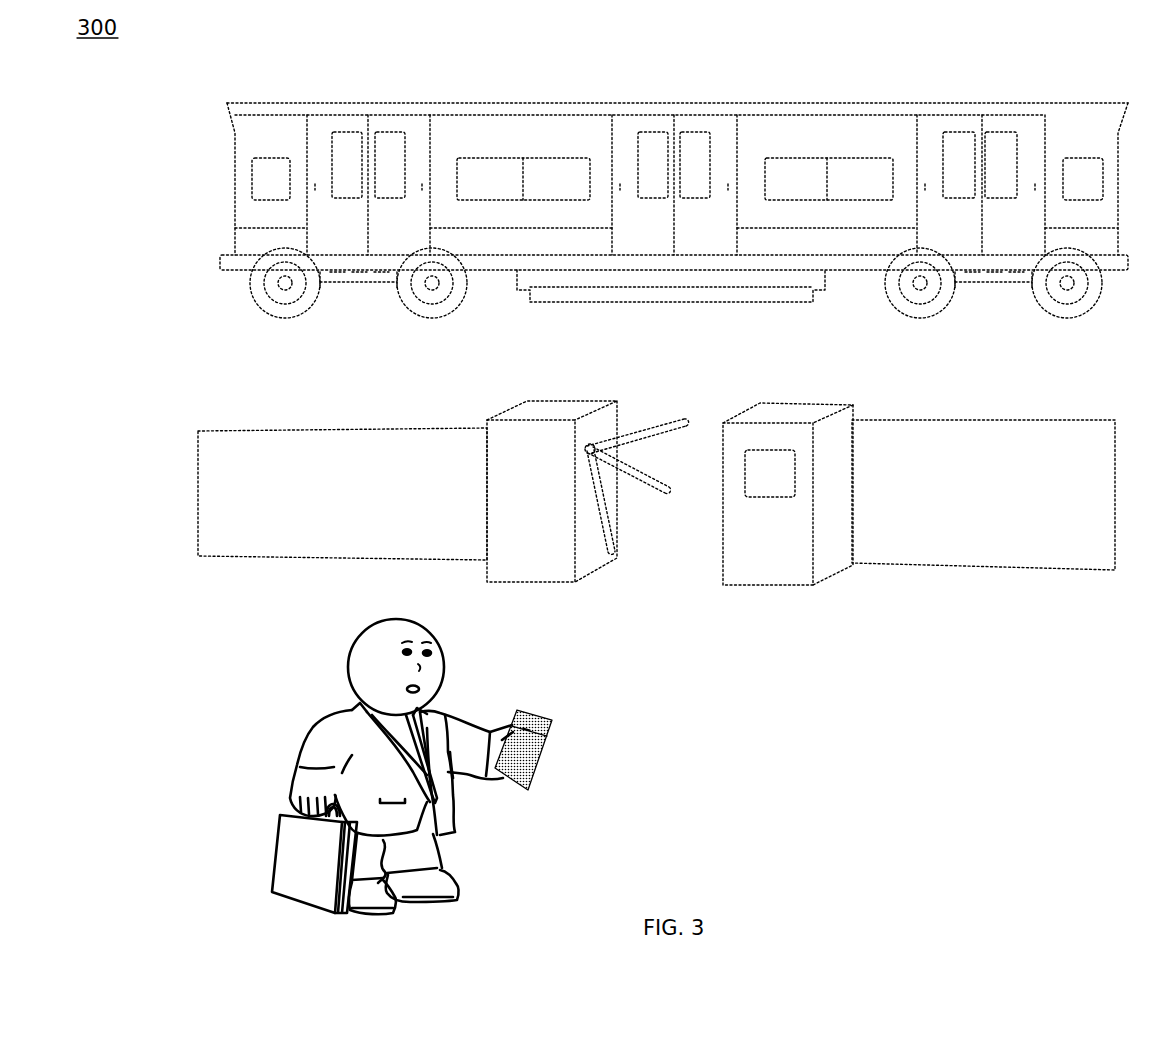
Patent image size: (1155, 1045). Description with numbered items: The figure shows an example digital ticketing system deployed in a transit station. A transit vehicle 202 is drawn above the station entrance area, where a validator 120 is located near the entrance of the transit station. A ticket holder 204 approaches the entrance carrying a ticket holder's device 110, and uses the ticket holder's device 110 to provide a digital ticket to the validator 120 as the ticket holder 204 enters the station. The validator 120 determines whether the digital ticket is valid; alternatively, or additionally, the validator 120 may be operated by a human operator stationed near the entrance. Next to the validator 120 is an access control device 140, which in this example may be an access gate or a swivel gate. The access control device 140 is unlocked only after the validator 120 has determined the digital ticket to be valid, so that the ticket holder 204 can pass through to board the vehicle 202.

The vehicle 202 is at (832, 99).
The access control device 140 is at (542, 408).
The validator 120 is at (767, 462).
The ticket holder 204 is at (328, 663).
The ticket holder's device 110 is at (545, 740).